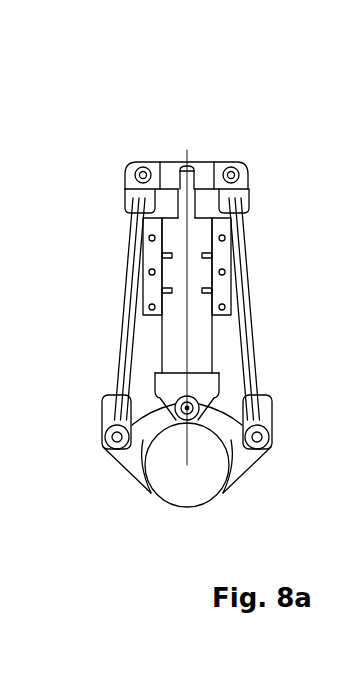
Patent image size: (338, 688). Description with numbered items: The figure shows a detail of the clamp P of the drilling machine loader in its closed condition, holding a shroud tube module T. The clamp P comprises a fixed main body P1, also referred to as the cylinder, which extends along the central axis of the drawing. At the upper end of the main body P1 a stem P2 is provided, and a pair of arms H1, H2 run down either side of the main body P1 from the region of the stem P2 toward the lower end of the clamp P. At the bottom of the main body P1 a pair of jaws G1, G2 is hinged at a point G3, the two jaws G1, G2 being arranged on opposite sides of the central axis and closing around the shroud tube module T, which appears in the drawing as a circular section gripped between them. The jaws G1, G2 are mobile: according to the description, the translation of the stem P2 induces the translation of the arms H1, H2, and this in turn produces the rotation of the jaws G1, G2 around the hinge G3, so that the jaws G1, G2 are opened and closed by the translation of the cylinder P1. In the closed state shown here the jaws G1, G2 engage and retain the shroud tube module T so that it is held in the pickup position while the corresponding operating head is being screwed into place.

The clamp P is at (266, 221).
The fixed main body P1 is at (177, 342).
The stem P2 is at (185, 203).
The arm H1 is at (130, 283).
The arm H2 is at (245, 310).
The jaw G1 is at (137, 446).
The jaw G2 is at (222, 429).
The hinge G3 is at (192, 407).
The shroud tube module T is at (188, 506).